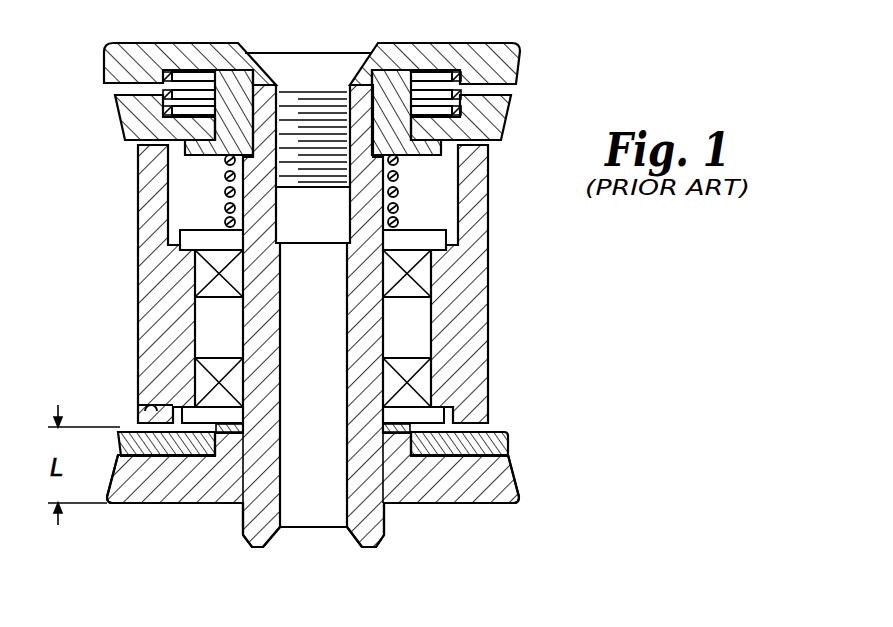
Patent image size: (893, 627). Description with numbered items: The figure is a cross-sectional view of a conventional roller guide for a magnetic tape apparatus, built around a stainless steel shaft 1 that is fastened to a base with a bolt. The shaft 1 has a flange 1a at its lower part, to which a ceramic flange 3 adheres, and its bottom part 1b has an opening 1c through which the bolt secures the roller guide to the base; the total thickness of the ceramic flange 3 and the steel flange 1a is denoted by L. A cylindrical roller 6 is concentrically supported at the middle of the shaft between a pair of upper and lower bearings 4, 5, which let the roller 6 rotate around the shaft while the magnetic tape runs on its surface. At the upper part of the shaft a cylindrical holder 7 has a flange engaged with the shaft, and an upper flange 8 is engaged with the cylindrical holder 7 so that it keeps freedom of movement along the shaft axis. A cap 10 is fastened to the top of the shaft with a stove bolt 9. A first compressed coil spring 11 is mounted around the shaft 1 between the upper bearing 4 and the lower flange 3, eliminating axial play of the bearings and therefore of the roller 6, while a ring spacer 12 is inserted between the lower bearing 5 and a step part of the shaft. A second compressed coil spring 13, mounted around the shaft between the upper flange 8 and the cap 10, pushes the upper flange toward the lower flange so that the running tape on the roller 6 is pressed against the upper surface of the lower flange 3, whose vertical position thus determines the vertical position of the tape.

The shaft 1 is at (376, 323).
The flange 1a is at (489, 477).
The bottom part 1b is at (243, 537).
The opening 1c is at (322, 517).
The ceramic flange 3 is at (484, 447).
The upper bearing 4 is at (423, 272).
The lower bearing 5 is at (425, 387).
The cylindrical roller 6 is at (143, 410).
The cylindrical holder 7 is at (228, 90).
The upper flange 8 is at (136, 120).
The stove bolt 9 is at (347, 58).
The cap 10 is at (461, 53).
The first compressed coil spring 11 is at (411, 190).
The ring spacer 12 is at (392, 433).
The second compressed coil spring 13 is at (180, 76).